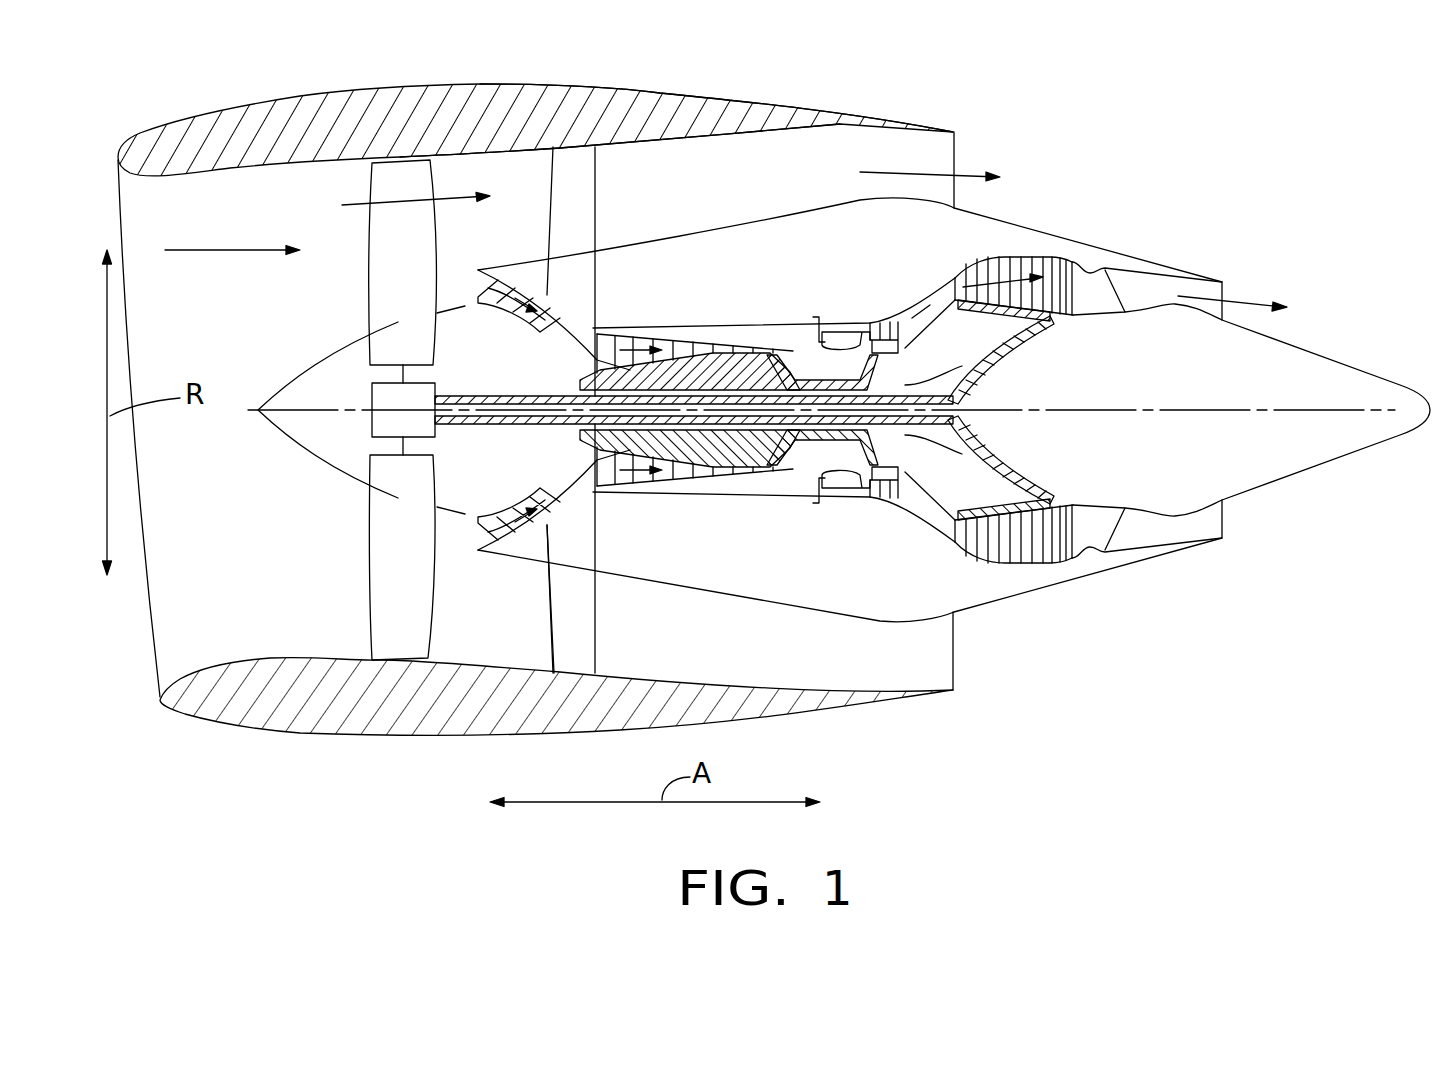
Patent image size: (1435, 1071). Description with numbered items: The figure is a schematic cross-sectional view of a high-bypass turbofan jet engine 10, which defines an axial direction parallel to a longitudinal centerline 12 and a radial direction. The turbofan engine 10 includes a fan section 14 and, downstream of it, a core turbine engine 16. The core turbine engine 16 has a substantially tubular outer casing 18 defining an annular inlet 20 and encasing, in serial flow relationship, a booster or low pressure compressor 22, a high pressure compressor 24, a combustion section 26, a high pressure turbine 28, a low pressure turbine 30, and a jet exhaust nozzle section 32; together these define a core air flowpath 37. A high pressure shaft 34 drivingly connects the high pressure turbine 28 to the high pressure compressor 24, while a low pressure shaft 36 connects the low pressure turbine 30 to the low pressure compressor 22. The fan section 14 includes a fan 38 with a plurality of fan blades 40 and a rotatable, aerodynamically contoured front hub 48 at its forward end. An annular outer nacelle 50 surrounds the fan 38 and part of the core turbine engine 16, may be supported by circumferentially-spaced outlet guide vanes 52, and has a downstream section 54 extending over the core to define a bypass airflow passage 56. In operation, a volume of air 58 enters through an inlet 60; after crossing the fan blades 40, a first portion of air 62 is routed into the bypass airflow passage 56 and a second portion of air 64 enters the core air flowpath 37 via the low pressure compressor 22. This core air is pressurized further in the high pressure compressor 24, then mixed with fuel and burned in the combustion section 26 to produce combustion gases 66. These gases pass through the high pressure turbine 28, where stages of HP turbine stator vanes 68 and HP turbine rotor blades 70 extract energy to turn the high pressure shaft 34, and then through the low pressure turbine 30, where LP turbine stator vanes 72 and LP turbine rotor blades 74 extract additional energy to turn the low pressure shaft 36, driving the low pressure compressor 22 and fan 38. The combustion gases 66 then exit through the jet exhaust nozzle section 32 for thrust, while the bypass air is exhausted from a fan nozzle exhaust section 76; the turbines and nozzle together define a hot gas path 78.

The turbofan engine 10 is at (1130, 118).
The longitudinal centerline 12 is at (1155, 410).
The fan section 14 is at (273, 200).
The core turbine engine 16 is at (797, 250).
The outer casing 18 is at (786, 603).
The annular inlet 20 is at (470, 538).
The low pressure compressor 22 is at (545, 488).
The high pressure compressor 24 is at (634, 500).
The combustion section 26 is at (832, 505).
The high pressure turbine 28 is at (925, 494).
The low pressure turbine 30 is at (1065, 585).
The jet exhaust nozzle section 32 is at (1135, 553).
The high pressure shaft 34 is at (862, 362).
The low pressure shaft 36 is at (982, 366).
The core air flowpath 37 is at (576, 535).
The fan 38 is at (318, 468).
The fan blades 40 is at (367, 587).
The front hub 48 is at (277, 432).
The outer nacelle 50 is at (420, 735).
The outlet guide vanes 52 is at (598, 194).
The downstream section 54 is at (843, 111).
The bypass airflow passage 56 is at (765, 194).
The volume of air 58 is at (226, 250).
The inlet 60 is at (165, 669).
The first portion of air 62 is at (387, 198).
The second portion of air 64 is at (456, 283).
The combustion gases 66 is at (883, 325).
The HP turbine stator vanes 68 is at (855, 498).
The HP turbine rotor blades 70 is at (892, 463).
The LP turbine stator vanes 72 is at (963, 552).
The LP turbine rotor blades 74 is at (975, 558).
The fan nozzle exhaust section 76 is at (940, 153).
The hot gas path 78 is at (933, 277).